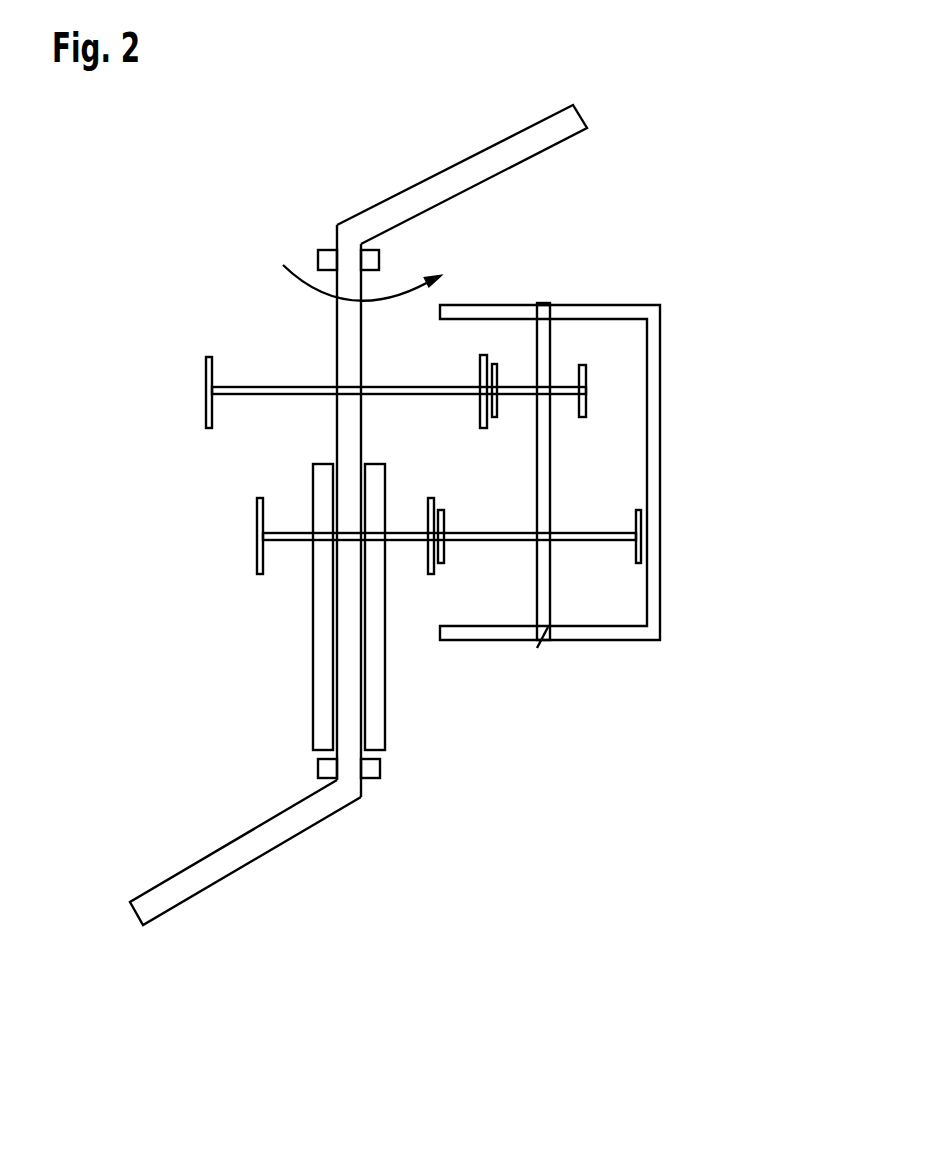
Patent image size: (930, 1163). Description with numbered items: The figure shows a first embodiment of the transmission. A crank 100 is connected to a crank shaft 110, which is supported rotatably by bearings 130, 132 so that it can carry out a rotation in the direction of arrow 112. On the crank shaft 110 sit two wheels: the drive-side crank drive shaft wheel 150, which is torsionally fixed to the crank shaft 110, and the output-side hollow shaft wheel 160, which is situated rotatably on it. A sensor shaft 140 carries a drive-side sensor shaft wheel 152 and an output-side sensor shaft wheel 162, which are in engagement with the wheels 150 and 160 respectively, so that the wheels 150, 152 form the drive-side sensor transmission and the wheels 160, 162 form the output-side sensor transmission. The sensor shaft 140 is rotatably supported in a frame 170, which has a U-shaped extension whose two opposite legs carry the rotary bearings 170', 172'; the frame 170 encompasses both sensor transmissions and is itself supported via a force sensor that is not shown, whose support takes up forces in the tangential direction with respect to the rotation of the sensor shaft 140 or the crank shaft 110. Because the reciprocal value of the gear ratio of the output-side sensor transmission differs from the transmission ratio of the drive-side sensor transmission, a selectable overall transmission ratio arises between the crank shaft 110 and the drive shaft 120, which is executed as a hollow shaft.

The crank 100 is at (538, 142).
The crank shaft 110 is at (350, 347).
The arrow 112 is at (323, 297).
The drive shaft 120 is at (318, 695).
The bearing 130 is at (380, 260).
The bearing 132 is at (380, 767).
The clutch / transmission shaft 140 is at (542, 447).
The drive-side crank drive shaft wheel 150 is at (207, 408).
The drive-side sensor shaft wheel 152 is at (565, 385).
The output-side hollow shaft wheel 160 is at (260, 517).
The output-side sensor shaft wheel 162 is at (597, 533).
The frame 170 is at (611, 472).
The rotary bearing 170' is at (540, 270).
The rotary bearing 172' is at (542, 682).